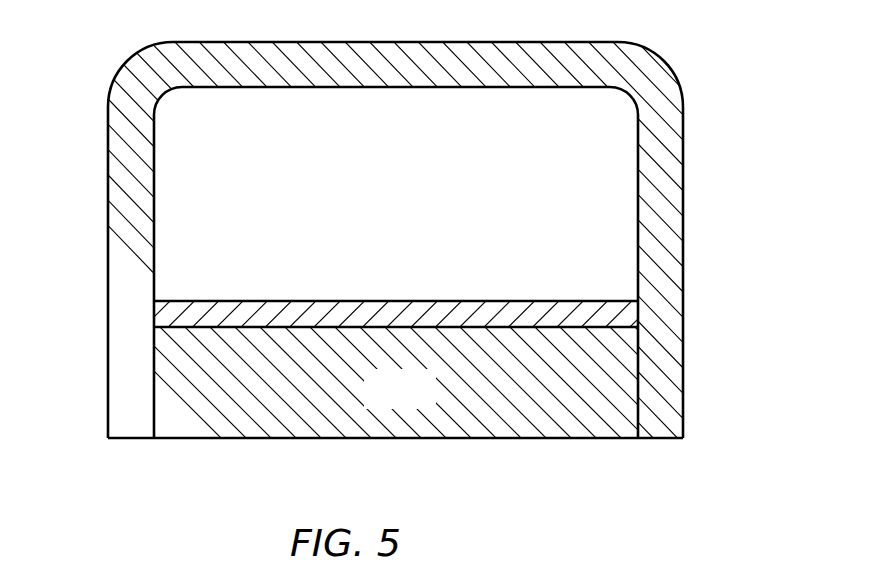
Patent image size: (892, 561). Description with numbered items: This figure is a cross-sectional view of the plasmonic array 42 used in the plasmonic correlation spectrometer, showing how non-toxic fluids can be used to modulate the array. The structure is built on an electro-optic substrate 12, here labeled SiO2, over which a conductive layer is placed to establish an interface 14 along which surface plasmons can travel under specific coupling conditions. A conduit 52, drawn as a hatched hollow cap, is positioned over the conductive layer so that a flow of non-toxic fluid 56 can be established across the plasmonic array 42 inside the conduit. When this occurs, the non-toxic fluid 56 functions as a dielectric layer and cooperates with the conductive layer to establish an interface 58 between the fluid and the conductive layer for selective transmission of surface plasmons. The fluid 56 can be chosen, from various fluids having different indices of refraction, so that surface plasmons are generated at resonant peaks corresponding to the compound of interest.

The electro-optic substrate 12 is at (222, 395).
The interface 14 is at (193, 325).
The plasmonic array 42 is at (583, 458).
The conduit 52 is at (668, 156).
The non-toxic fluid 56 is at (590, 227).
The interface 58 is at (598, 300).